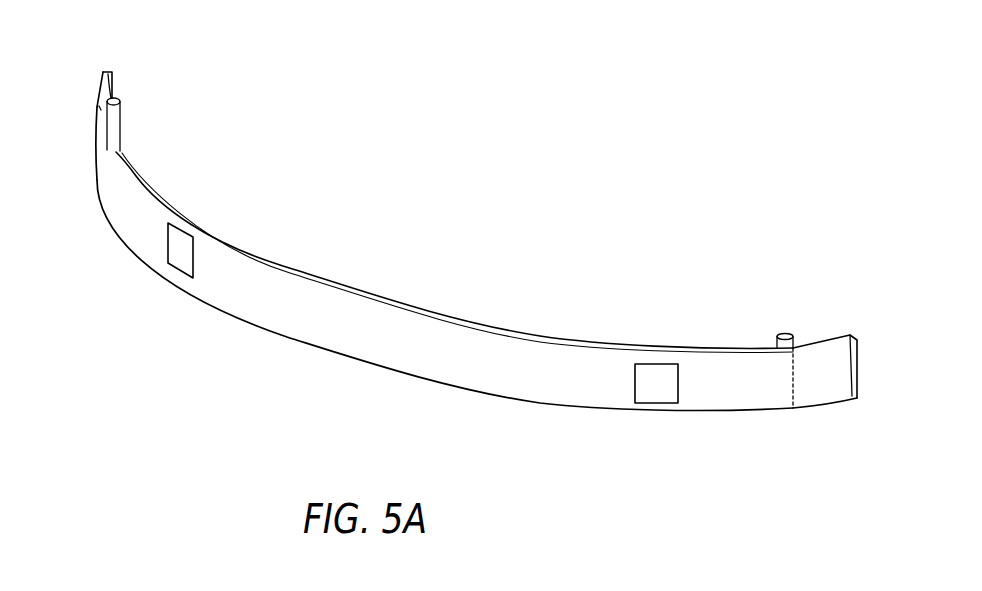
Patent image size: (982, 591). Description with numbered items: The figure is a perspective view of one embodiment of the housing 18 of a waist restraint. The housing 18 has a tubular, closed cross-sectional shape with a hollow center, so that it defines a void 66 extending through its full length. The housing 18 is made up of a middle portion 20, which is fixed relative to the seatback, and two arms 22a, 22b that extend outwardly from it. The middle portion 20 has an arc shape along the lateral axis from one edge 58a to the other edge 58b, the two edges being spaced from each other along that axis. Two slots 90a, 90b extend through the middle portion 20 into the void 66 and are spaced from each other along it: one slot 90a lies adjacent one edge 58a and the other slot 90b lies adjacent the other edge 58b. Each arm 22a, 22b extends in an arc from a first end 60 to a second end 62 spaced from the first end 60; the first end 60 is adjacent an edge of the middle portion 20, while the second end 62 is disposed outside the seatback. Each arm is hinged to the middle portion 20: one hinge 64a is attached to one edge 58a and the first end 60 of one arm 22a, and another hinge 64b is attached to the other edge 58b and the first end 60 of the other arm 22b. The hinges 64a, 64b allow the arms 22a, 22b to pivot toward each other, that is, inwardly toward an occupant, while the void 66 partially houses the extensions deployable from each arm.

The housing 18 is at (470, 131).
The middle portion 20 is at (320, 350).
The arm 22a is at (117, 85).
The arm 22b is at (823, 408).
The edge 58a is at (98, 118).
The edge 58b is at (792, 383).
The first end 60 is at (102, 107).
The second end 62 is at (103, 70).
The hinge 64a is at (122, 122).
The hinge 64b is at (779, 333).
The void 66 is at (183, 253).
The slot 90a is at (195, 255).
The slot 90b is at (633, 373).